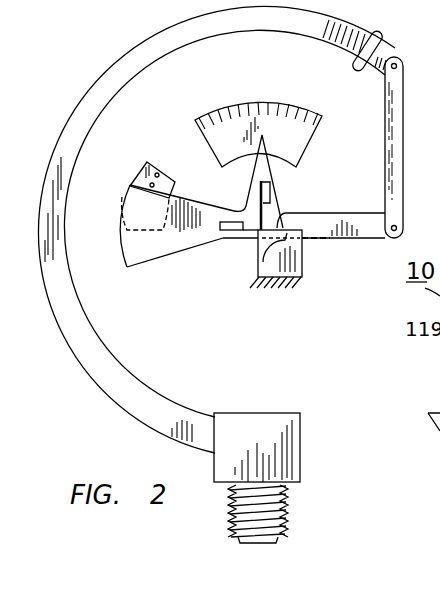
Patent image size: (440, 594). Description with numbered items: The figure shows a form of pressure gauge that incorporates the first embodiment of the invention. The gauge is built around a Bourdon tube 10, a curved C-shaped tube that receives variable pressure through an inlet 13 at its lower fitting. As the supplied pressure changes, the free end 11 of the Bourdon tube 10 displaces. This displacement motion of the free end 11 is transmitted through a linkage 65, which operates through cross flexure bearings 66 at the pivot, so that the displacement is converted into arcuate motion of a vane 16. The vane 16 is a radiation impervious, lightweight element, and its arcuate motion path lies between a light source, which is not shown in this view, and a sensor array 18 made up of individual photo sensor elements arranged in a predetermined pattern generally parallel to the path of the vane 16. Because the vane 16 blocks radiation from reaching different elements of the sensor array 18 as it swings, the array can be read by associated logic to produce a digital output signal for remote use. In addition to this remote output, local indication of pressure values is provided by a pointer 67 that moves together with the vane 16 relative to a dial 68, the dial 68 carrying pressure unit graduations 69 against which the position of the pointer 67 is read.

The Bourdon tube 10 is at (86, 365).
The free end 11 is at (395, 47).
The inlet 13 is at (252, 546).
The vane 16 is at (162, 246).
The sensor array 18 is at (162, 157).
The linkage 65 is at (404, 108).
The cross flexure bearings 66 is at (274, 219).
The pointer 67 is at (270, 152).
The dial 68 is at (253, 108).
The pressure unit graduations 69 is at (232, 114).